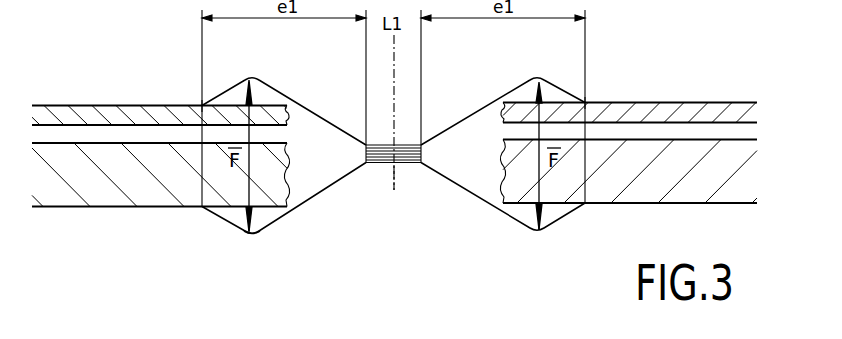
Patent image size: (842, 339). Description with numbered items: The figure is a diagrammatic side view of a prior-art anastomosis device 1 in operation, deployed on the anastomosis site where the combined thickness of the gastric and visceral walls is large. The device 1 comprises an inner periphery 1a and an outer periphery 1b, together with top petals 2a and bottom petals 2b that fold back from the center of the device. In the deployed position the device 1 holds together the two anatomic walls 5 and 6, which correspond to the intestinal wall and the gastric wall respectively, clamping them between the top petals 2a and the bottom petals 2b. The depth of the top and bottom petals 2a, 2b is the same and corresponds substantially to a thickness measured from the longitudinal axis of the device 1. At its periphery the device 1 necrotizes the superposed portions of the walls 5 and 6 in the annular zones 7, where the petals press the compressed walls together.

The anastomosis device 1 is at (412, 195).
The inner periphery 1a is at (255, 236).
The outer periphery 1b is at (370, 165).
The top petals 2a is at (309, 108).
The bottom petals 2b is at (309, 200).
The anatomic wall 5 is at (105, 105).
The anatomic wall 6 is at (118, 207).
The annular zones 7 is at (202, 105).